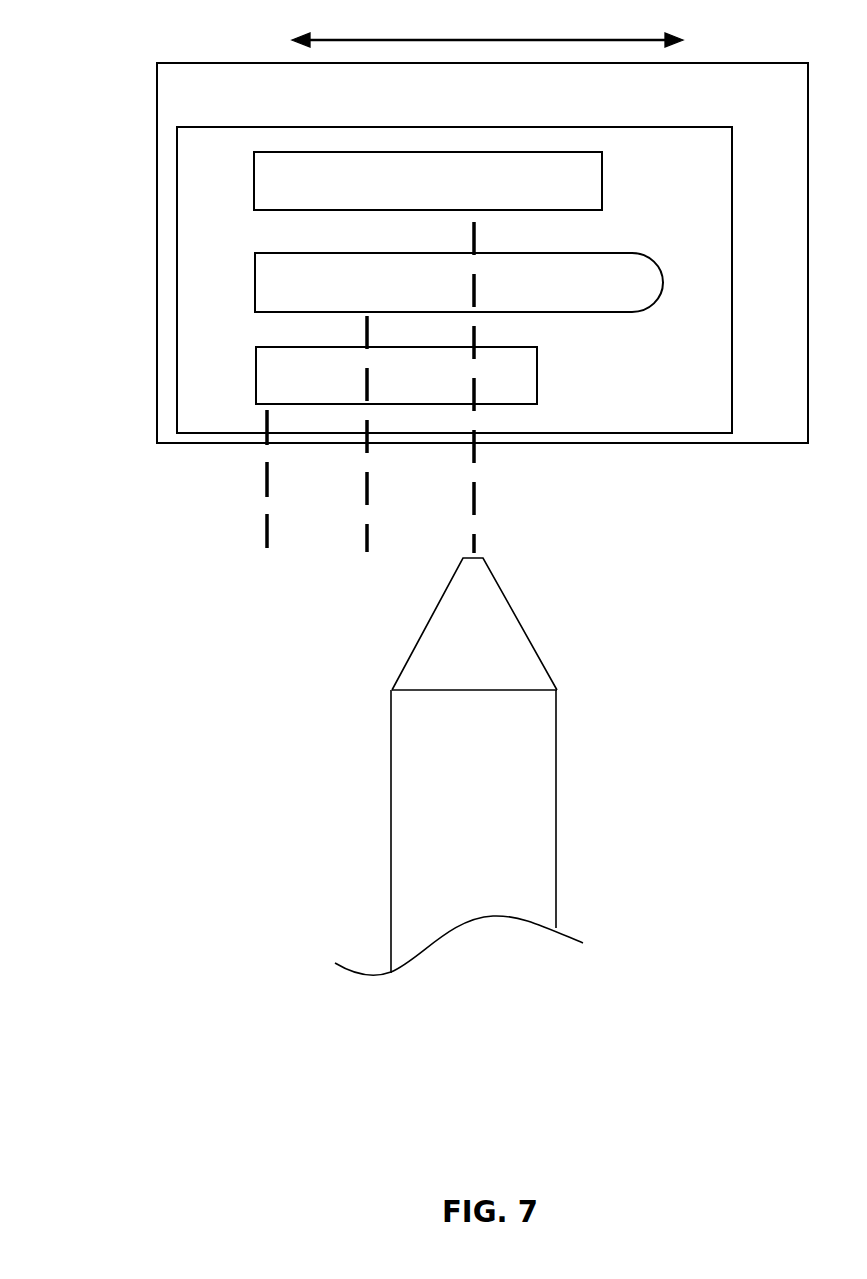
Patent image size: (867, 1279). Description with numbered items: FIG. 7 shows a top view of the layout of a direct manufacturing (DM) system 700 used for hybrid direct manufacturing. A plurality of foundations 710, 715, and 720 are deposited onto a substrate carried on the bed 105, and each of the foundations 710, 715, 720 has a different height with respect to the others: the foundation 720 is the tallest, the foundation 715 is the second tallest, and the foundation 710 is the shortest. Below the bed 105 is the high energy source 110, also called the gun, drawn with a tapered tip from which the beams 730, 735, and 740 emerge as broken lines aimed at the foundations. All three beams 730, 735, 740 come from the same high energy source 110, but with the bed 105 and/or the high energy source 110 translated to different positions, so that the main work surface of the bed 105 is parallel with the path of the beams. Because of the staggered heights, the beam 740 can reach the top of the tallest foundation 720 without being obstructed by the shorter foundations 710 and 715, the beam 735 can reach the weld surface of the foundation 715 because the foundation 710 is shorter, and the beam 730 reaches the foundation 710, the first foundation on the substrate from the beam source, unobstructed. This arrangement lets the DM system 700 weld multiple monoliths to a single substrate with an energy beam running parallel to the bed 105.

The bed 105 is at (231, 114).
The foundation 720 is at (315, 206).
The foundation 715 is at (311, 306).
The foundation 710 is at (318, 392).
The beam 730 is at (267, 480).
The beam 735 is at (367, 503).
The beam 740 is at (477, 537).
The high energy source 110 is at (556, 770).
The direct manufacturing system 700 is at (165, 1023).